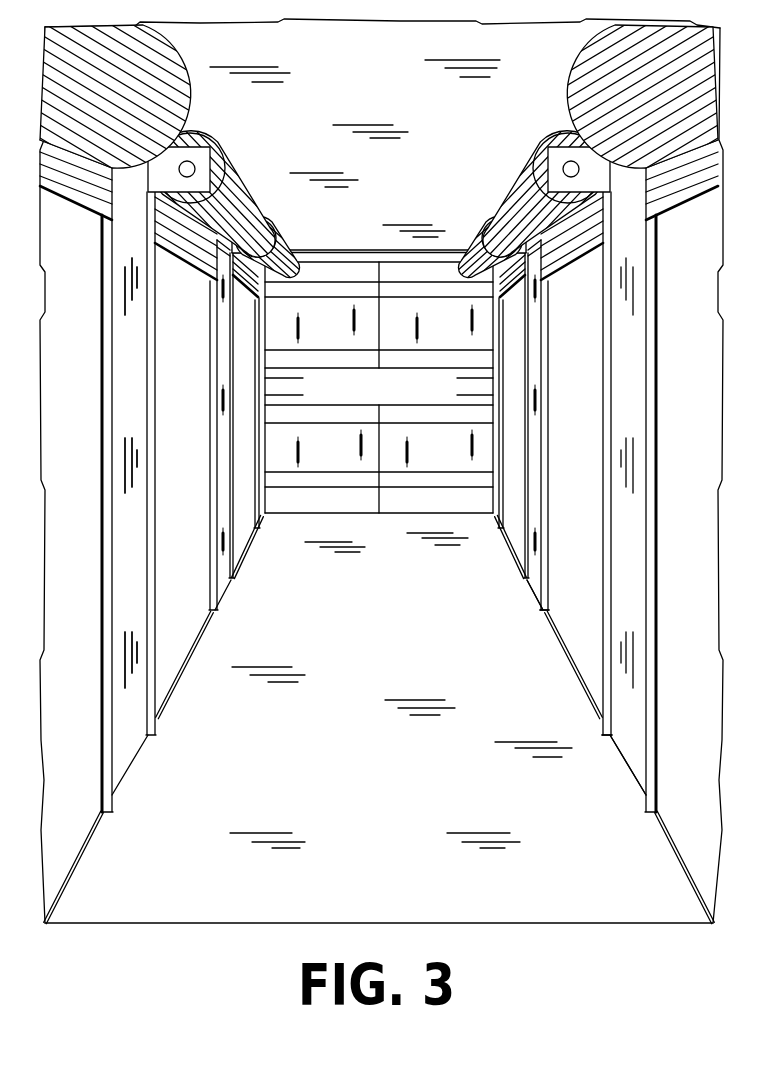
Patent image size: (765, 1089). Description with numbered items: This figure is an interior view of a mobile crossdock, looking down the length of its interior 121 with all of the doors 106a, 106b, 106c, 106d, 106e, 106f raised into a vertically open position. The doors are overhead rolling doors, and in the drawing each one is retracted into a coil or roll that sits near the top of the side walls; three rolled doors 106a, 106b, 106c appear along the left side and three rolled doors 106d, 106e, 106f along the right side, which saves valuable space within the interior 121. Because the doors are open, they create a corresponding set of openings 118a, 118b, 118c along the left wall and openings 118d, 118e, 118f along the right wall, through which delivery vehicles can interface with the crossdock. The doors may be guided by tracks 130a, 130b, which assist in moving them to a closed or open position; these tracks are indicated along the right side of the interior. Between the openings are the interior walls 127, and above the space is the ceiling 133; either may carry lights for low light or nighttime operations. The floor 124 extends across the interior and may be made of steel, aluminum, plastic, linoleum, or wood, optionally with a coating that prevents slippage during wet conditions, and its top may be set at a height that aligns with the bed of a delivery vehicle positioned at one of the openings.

The door 106a is at (143, 88).
The door 106b is at (238, 184).
The door 106c is at (283, 262).
The door 106d is at (600, 88).
The door 106e is at (515, 194).
The door 106f is at (472, 248).
The ceiling 133 is at (397, 103).
The interior 121 is at (441, 400).
The floor 124 is at (397, 666).
The interior walls 127 is at (128, 545).
The opening 118a is at (95, 833).
The opening 118b is at (185, 672).
The opening 118c is at (251, 549).
The opening 118d is at (664, 832).
The opening 118e is at (575, 670).
The opening 118f is at (506, 549).
The track 130a is at (541, 609).
The track 130b is at (603, 735).